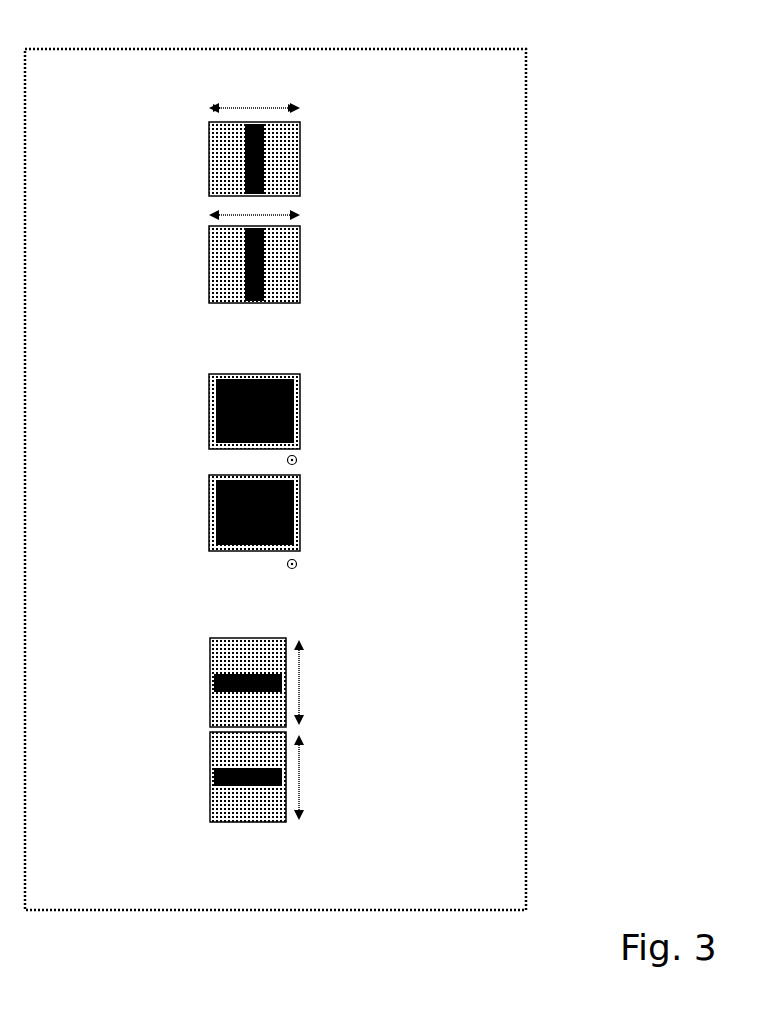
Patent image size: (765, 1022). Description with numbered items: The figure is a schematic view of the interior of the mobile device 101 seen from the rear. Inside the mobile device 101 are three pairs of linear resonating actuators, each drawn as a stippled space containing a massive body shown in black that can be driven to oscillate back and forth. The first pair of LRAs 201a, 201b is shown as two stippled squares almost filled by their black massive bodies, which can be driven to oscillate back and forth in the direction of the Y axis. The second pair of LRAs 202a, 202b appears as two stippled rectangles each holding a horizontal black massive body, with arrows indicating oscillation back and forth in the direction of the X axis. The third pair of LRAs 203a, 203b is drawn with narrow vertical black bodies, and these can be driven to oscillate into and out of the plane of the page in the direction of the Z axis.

The mobile device 101 is at (527, 78).
The linear resonating actuator of third pair 203a is at (300, 163).
The linear resonating actuator of third pair 203b is at (300, 258).
The linear resonating actuator of first pair 201a is at (300, 415).
The linear resonating actuator of first pair 201b is at (300, 510).
The linear resonating actuator of second pair 202a is at (286, 678).
The linear resonating actuator of second pair 202b is at (286, 775).